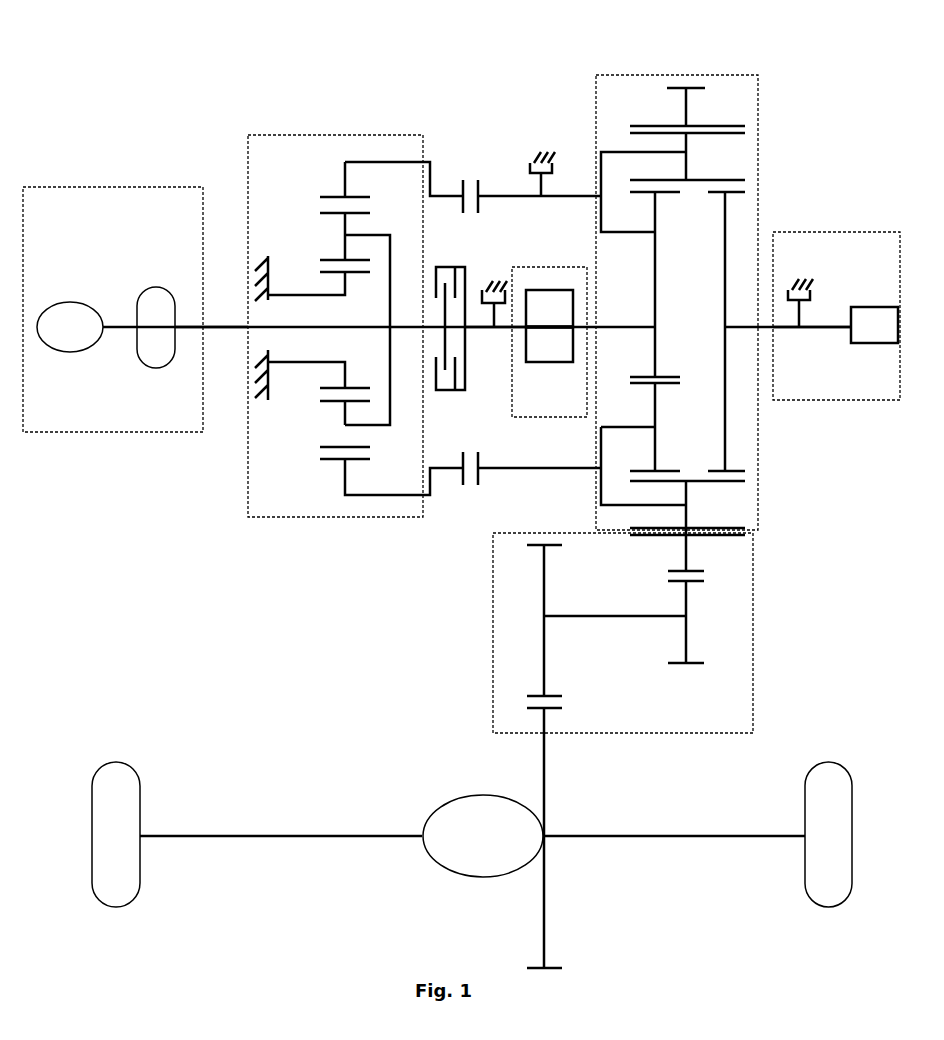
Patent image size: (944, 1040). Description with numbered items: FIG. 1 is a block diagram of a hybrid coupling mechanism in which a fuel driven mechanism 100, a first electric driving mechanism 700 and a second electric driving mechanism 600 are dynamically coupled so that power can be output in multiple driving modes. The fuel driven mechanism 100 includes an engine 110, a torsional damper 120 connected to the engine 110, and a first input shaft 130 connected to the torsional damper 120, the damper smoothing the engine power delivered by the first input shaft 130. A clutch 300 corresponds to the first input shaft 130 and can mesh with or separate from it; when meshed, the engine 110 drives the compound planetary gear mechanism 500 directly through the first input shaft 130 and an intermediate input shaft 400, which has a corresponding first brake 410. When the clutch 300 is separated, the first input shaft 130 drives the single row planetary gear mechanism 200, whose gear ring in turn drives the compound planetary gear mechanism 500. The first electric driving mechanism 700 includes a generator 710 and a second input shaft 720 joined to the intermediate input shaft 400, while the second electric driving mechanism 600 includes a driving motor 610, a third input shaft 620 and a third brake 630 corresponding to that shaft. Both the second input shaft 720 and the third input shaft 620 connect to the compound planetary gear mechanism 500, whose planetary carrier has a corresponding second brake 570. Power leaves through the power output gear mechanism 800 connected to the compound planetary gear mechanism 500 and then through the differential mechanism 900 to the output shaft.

The fuel driven mechanism 100 is at (112, 185).
The engine 110 is at (70, 303).
The torsional damper 120 is at (157, 287).
The first input shaft 130 is at (192, 340).
The single row planetary gear mechanism 200 is at (322, 135).
The clutch 300 is at (455, 267).
The intermediate input shaft 400 is at (500, 330).
The first brake 410 is at (503, 278).
The compound planetary gear mechanism 500 is at (660, 75).
The second brake 570 is at (545, 155).
The second electric driving mechanism 600 is at (860, 232).
The driving motor 610 is at (855, 305).
The third input shaft 620 is at (822, 330).
The third brake 630 is at (797, 290).
The first electric driving mechanism 700 is at (553, 267).
The generator 710 is at (545, 350).
The second input shaft 720 is at (583, 330).
The power output gear mechanism 800 is at (493, 630).
The differential mechanism 900 is at (462, 800).